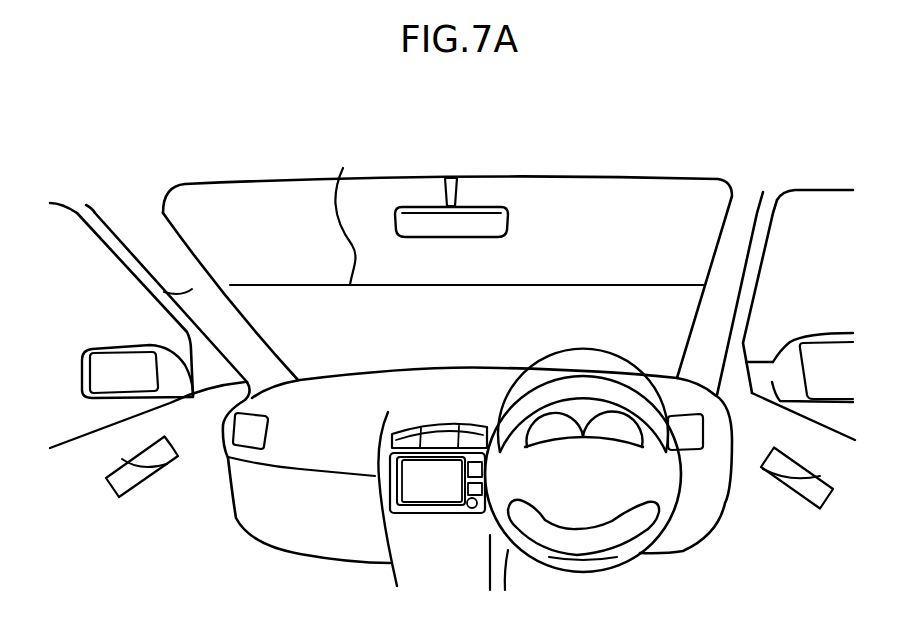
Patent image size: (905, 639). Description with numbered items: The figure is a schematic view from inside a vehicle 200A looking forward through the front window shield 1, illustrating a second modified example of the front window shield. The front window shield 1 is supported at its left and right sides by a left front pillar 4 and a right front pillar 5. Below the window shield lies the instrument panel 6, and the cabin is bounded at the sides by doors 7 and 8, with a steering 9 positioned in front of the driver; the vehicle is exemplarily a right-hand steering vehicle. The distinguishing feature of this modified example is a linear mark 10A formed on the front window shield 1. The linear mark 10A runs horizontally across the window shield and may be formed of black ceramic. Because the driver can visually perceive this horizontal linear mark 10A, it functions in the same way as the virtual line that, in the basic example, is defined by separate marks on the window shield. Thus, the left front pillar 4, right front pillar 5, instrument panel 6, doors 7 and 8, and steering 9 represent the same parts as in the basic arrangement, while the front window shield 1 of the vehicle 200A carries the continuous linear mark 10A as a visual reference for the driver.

The front window shield 1 is at (263, 236).
The linear mark 10A is at (403, 215).
The left front pillar 4 is at (147, 289).
The right front pillar 5 is at (731, 276).
The instrument panel 6 is at (327, 406).
The door 7 is at (80, 469).
The door 8 is at (828, 464).
The steering 9 is at (662, 522).
The vehicle 200A is at (655, 144).